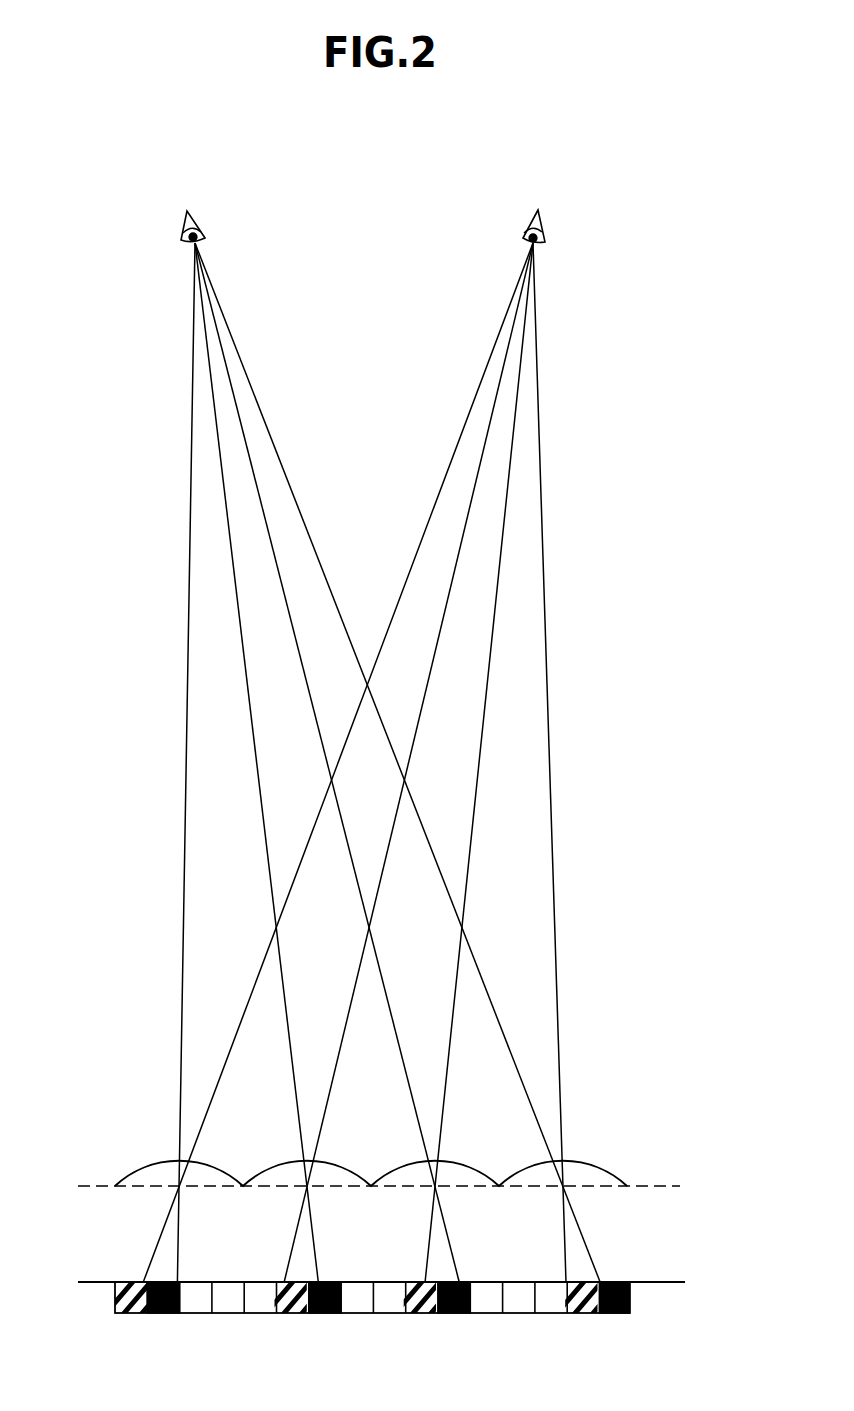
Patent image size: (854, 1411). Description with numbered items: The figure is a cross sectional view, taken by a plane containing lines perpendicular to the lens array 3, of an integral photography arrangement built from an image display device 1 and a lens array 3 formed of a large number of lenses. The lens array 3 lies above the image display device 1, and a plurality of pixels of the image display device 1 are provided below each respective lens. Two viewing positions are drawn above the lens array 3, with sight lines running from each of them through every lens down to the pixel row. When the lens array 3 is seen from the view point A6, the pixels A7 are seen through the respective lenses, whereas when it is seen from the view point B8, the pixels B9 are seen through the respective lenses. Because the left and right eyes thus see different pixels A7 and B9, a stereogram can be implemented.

The view point A6 is at (205, 221).
The view point B8 is at (540, 208).
The lens array 3 is at (640, 1225).
The image display device 1 is at (395, 1329).
The pixels B9 is at (118, 1300).
The pixels A7 is at (177, 1303).